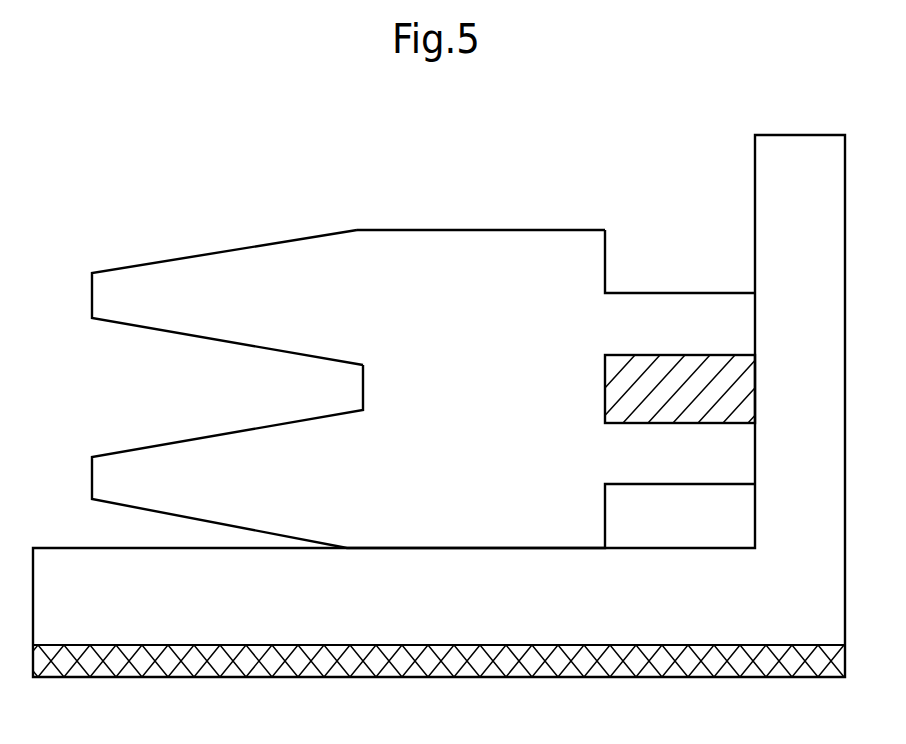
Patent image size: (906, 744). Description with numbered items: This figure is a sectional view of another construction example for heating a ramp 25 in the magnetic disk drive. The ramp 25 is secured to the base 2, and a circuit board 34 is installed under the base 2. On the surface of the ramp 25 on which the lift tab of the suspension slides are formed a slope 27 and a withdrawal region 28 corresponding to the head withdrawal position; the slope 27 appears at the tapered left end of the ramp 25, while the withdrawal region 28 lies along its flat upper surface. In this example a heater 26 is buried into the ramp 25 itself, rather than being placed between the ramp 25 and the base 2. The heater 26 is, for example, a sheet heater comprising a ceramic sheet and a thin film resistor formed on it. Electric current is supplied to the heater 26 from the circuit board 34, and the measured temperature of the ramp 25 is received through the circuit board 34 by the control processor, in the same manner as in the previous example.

The base 2 is at (435, 439).
The circuit board 34 is at (297, 662).
The ramp 25 is at (423, 349).
The slope 27 is at (193, 258).
The withdrawal region 28 is at (545, 228).
The heater 26 is at (742, 388).